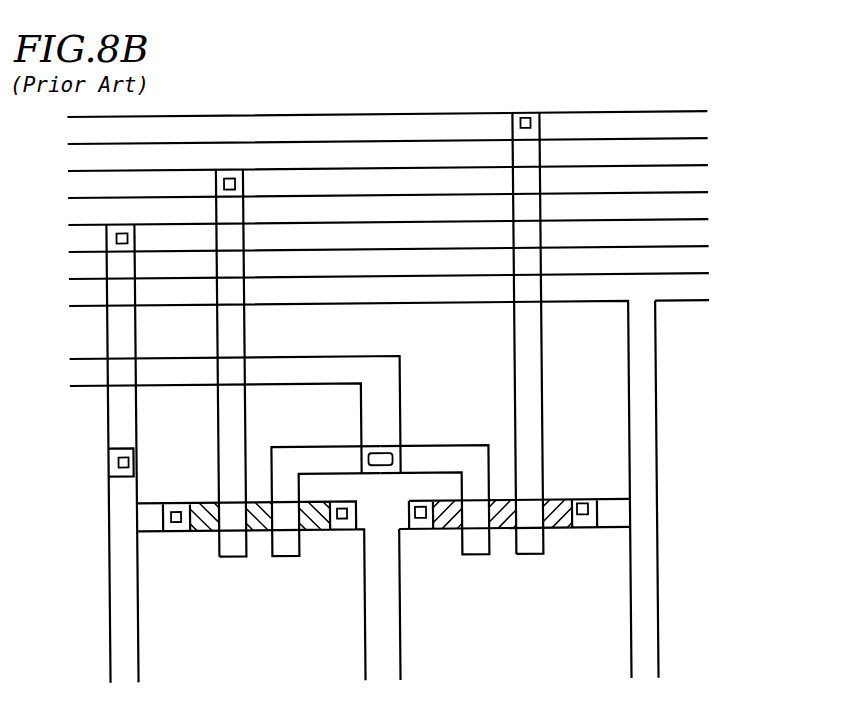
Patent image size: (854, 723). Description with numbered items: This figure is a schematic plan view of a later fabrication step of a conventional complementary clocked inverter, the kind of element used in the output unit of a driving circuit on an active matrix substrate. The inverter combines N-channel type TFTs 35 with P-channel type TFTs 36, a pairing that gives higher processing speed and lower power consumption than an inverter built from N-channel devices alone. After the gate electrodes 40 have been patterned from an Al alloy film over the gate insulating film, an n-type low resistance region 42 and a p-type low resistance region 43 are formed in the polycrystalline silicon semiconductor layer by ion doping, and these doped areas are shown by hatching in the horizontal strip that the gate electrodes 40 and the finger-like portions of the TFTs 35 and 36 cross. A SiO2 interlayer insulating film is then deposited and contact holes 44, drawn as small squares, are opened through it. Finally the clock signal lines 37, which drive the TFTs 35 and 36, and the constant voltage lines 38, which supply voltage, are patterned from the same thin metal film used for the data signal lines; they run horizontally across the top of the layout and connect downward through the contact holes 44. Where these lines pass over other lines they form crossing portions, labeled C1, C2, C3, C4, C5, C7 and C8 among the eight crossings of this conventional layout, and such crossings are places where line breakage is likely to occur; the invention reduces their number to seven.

The N-channel type TFT 35 is at (228, 560).
The P-channel type TFT 36 is at (470, 562).
The clock signal line 37 is at (650, 118).
The constant voltage line 38 is at (700, 235).
The gate electrode 40 is at (238, 351).
The n-type low resistance region 42 is at (198, 526).
The p-type low resistance region 43 is at (558, 503).
The contact hole 44 is at (229, 176).
The crossing portion C1 is at (517, 177).
The crossing portion C2 is at (521, 235).
The crossing portion C3 is at (536, 288).
The crossing portion C4 is at (223, 233).
The crossing portion C5 is at (238, 287).
The crossing portion C7 is at (112, 290).
The crossing portion C8 is at (112, 370).